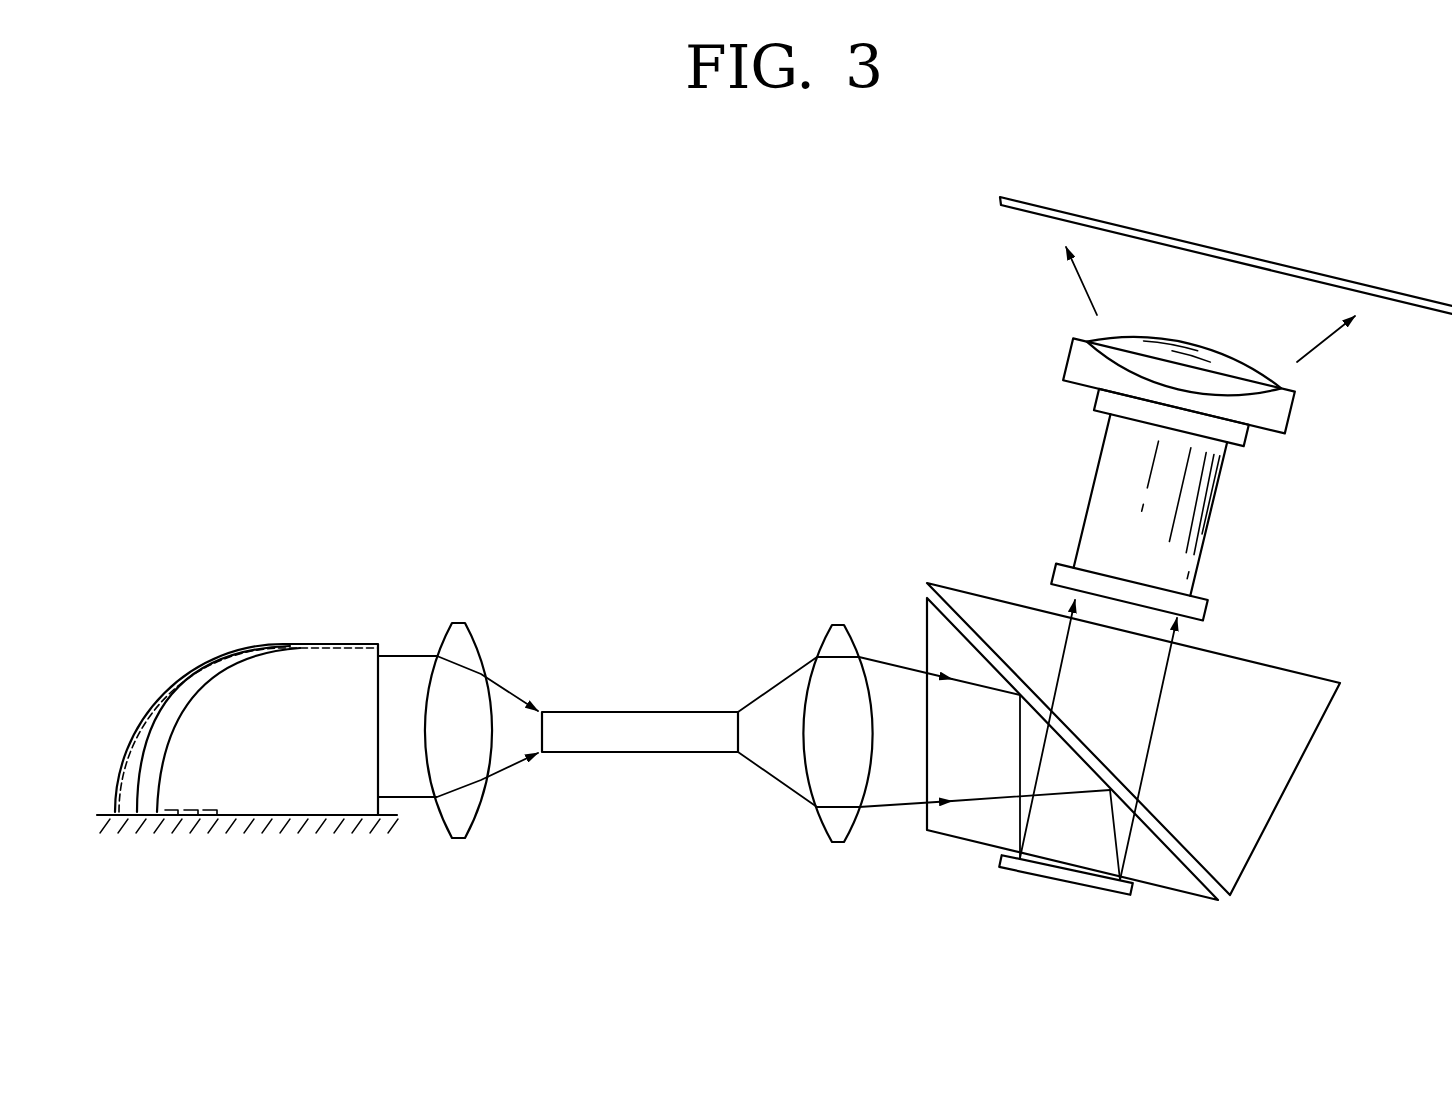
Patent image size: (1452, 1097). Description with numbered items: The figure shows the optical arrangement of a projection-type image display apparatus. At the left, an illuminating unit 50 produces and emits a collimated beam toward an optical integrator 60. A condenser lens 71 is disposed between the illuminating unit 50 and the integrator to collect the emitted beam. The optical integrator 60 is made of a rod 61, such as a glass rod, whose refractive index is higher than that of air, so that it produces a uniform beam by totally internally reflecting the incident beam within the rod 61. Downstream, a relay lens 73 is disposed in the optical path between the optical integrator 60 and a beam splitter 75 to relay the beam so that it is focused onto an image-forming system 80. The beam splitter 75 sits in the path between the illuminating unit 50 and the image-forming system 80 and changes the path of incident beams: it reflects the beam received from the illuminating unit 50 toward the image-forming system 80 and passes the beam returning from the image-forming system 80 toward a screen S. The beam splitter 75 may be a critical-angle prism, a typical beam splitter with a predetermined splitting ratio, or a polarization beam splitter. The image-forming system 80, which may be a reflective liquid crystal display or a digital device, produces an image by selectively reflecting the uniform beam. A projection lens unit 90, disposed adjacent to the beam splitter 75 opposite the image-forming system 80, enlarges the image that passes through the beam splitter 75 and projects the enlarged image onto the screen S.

The illuminating unit 50 is at (256, 626).
The optical integrator 60 is at (640, 662).
The rod 61 is at (661, 725).
The condenser lens 71 is at (458, 626).
The relay lens 73 is at (840, 626).
The beam splitter 75 is at (1334, 738).
The image-forming system 80 is at (1077, 883).
The projection lens unit 90 is at (1312, 433).
The screen S is at (1401, 295).